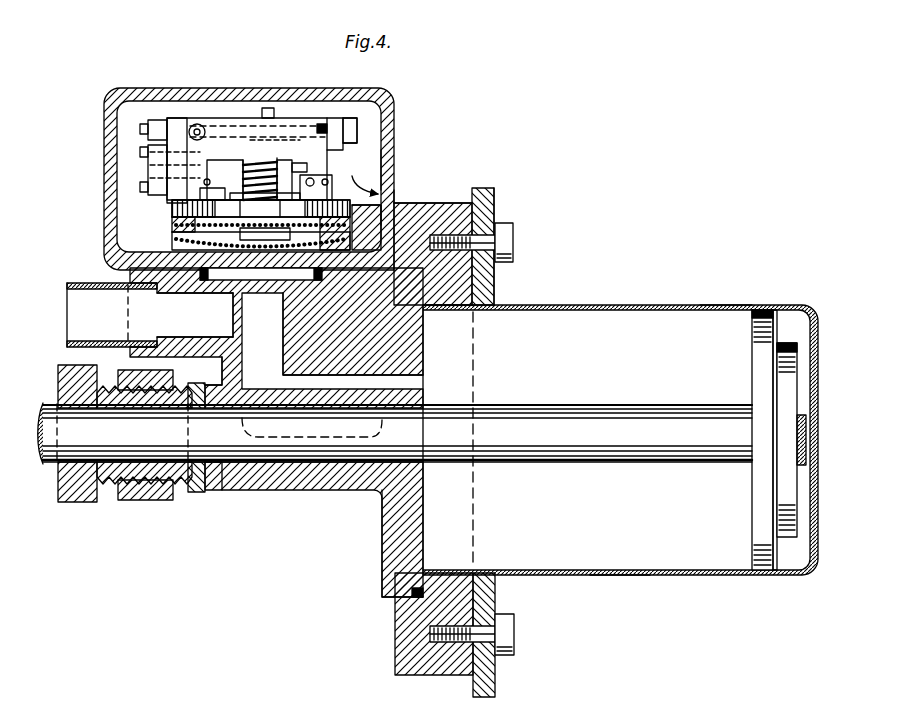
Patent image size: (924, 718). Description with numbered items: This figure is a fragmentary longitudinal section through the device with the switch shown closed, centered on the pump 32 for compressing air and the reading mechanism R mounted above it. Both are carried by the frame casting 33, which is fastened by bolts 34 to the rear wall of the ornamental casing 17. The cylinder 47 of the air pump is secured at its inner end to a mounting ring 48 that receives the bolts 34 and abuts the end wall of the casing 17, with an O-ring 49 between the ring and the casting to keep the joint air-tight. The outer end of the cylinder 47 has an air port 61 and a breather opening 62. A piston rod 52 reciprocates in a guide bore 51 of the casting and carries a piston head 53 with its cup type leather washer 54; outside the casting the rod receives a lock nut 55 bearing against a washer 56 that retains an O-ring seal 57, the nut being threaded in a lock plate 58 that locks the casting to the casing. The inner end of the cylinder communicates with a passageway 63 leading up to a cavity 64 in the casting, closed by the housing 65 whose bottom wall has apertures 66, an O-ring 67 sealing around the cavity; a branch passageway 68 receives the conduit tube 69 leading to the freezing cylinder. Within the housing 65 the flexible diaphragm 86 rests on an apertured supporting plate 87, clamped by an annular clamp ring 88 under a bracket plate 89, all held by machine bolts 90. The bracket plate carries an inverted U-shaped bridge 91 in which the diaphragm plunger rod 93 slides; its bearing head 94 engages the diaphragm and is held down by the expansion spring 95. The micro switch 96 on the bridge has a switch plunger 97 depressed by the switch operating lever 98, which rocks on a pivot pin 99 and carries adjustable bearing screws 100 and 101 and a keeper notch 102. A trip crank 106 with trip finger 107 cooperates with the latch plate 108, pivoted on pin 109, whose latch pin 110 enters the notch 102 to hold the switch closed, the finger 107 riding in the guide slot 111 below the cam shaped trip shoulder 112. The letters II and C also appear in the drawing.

The ornamental casing 17 is at (497, 190).
The pump 32 is at (617, 549).
The frame casting 33 is at (449, 303).
The bolts 34 is at (506, 242).
The cylinder 47 is at (652, 304).
The mounting ring 48 is at (451, 203).
The O-ring 49 is at (412, 598).
The guide bore 51 is at (426, 404).
The piston rod 52 is at (533, 440).
The piston head 53 is at (790, 342).
The cup type leather washer 54 is at (765, 309).
The lock nut 55 is at (107, 505).
The washer 56 is at (200, 494).
The O-ring seal 57 is at (214, 394).
The lock plate 58 is at (155, 502).
The air port 61 is at (735, 305).
The breather opening 62 is at (780, 308).
The passageway 63 is at (396, 386).
The cavity 64 is at (243, 296).
The housing 65 is at (104, 221).
The apertures 66 is at (262, 274).
The O-ring 67 is at (195, 315).
The branch passageway 68 is at (225, 328).
The conduit tube 69 is at (104, 283).
The flexible diaphragm 86 is at (180, 225).
The bottom supporting plate 87 is at (180, 247).
The annular clamp ring 88 is at (366, 230).
The bracket plate 89 is at (350, 230).
The machine bolts 90 is at (213, 190).
The bridge 91 is at (386, 160).
The diaphragm plunger rod 93 is at (315, 199).
The bearing head 94 is at (324, 233).
The expansion spring 95 is at (245, 161).
The electric switch 96 is at (148, 187).
The switch plunger 97 is at (148, 152).
The switch operating lever 98 is at (148, 130).
The pivot pin 99 is at (203, 124).
The adjustable bearing screw 100 is at (148, 122).
The adjustable bearing screw 101 is at (268, 107).
The keeper notch 102 is at (325, 123).
The trip crank 106 is at (308, 167).
The trip finger 107 is at (275, 200).
The latch plate 108 is at (296, 116).
The pivot pin 109 is at (401, 207).
The latch pin 110 is at (346, 118).
The guide slot 111 is at (274, 131).
The trip shoulder 112 is at (361, 175).
The reading mechanism R is at (349, 160).
The unit II is at (398, 194).
The cover C is at (497, 208).